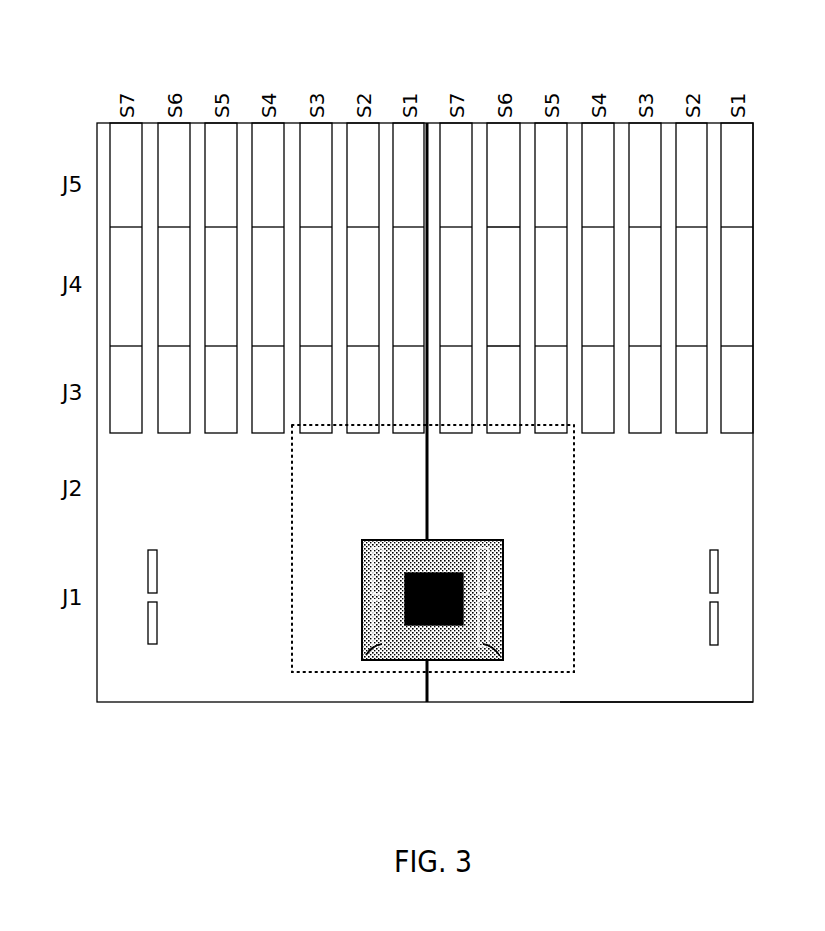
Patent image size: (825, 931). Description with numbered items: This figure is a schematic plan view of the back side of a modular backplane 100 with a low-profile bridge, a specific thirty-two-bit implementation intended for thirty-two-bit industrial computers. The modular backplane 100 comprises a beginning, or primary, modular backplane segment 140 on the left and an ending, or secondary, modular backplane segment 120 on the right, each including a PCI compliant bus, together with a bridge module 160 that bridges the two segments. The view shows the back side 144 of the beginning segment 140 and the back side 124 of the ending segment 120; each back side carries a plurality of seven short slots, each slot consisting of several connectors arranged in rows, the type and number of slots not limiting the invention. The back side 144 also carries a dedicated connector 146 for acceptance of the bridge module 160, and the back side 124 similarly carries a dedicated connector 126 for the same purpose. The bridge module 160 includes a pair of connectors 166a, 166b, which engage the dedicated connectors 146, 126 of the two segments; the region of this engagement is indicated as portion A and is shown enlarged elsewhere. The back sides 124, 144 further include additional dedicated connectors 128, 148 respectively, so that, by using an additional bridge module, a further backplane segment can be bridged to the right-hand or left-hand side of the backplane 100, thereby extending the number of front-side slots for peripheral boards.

The modular backplane 100 is at (407, 30).
The ending modular backplane segment 120 is at (433, 93).
The beginning modular backplane segment 140 is at (430, 93).
The back side of ending backplane segment 124 is at (617, 687).
The dedicated connector 126 is at (485, 647).
The additional dedicated connector 128 is at (715, 642).
The back side of beginning backplane segment 144 is at (150, 678).
The additional dedicated connector 148 is at (155, 641).
The dedicated connector 146 is at (382, 646).
The bridge module 160 is at (440, 661).
The connector 166a is at (382, 646).
The connector 166b is at (485, 647).
The portion A is at (292, 667).